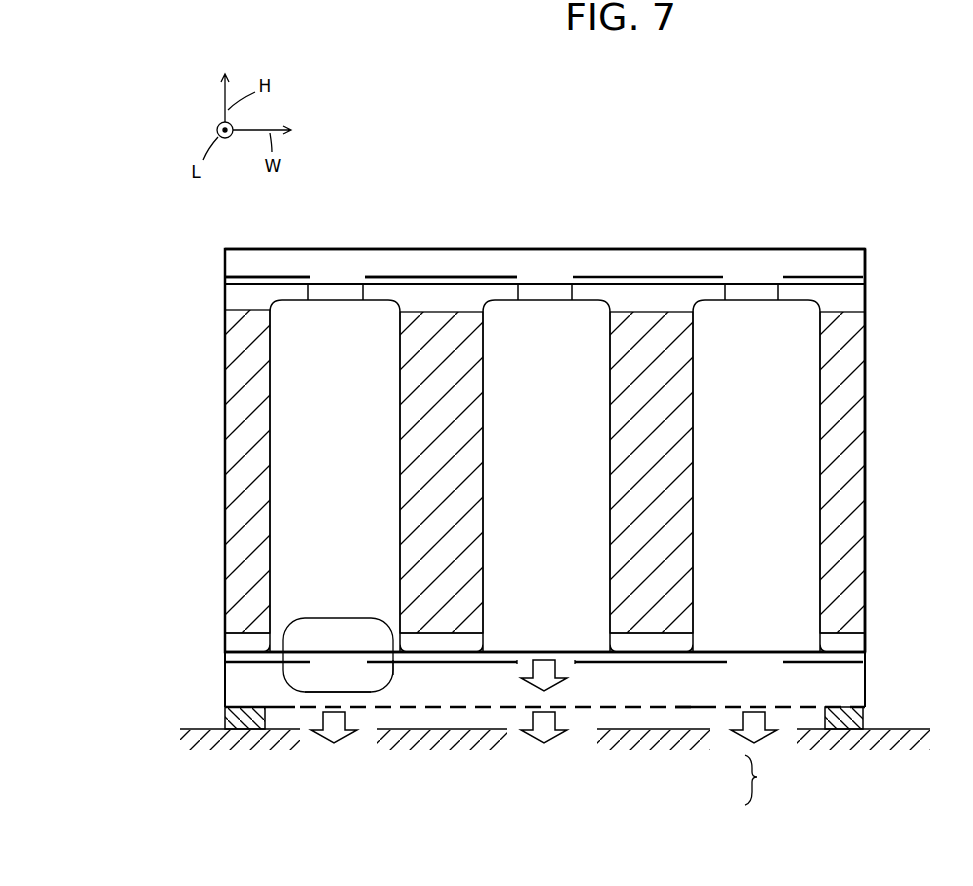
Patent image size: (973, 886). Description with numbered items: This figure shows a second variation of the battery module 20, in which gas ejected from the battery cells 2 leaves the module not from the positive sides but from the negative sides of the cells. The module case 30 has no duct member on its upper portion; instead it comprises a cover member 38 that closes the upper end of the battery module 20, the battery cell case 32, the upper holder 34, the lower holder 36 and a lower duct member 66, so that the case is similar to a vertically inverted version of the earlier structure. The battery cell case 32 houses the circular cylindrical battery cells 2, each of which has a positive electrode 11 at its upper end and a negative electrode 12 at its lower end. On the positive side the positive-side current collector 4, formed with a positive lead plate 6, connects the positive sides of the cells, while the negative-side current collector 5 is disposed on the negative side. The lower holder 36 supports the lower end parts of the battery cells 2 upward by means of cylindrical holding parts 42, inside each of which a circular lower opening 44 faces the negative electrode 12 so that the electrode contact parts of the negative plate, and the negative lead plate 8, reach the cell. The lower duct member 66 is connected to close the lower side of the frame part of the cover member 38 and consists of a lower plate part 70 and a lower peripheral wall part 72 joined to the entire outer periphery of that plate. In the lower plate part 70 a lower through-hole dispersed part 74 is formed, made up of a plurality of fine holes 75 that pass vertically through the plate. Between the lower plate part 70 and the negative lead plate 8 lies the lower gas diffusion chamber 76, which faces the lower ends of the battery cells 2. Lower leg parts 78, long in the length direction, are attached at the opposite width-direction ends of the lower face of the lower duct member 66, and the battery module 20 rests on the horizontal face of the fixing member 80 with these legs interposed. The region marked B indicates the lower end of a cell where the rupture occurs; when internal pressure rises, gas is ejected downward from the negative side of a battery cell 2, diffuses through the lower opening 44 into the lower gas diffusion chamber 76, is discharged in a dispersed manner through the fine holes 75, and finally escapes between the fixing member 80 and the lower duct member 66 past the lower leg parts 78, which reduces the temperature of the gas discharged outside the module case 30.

The battery module 20 is at (811, 146).
The cover member 38 is at (770, 249).
The module case 30 is at (868, 365).
The positive electrode 11 is at (335, 283).
The upper holder 34 is at (487, 282).
The positive-side current collector 4 is at (453, 277).
The positive lead plate 6 is at (252, 272).
The battery cell 2 is at (775, 437).
The battery cell case 32 is at (845, 520).
The holding part 42 is at (235, 642).
The lower holder 36 is at (845, 652).
The lower duct member 66 is at (938, 662).
The lower peripheral wall part 72 is at (866, 682).
The lower plate part 70 is at (866, 697).
The lower leg part 78 is at (863, 717).
The fixing member 80 is at (873, 748).
The negative electrode 12 is at (302, 645).
The lower opening 44 is at (355, 655).
The region B is at (385, 680).
The negative lead plate 8 is at (485, 662).
The lower gas diffusion chamber 76 is at (598, 686).
The negative-side current collector 5 is at (650, 665).
The fine hole 75 is at (693, 735).
The lower through-hole dispersed part 74 is at (763, 780).